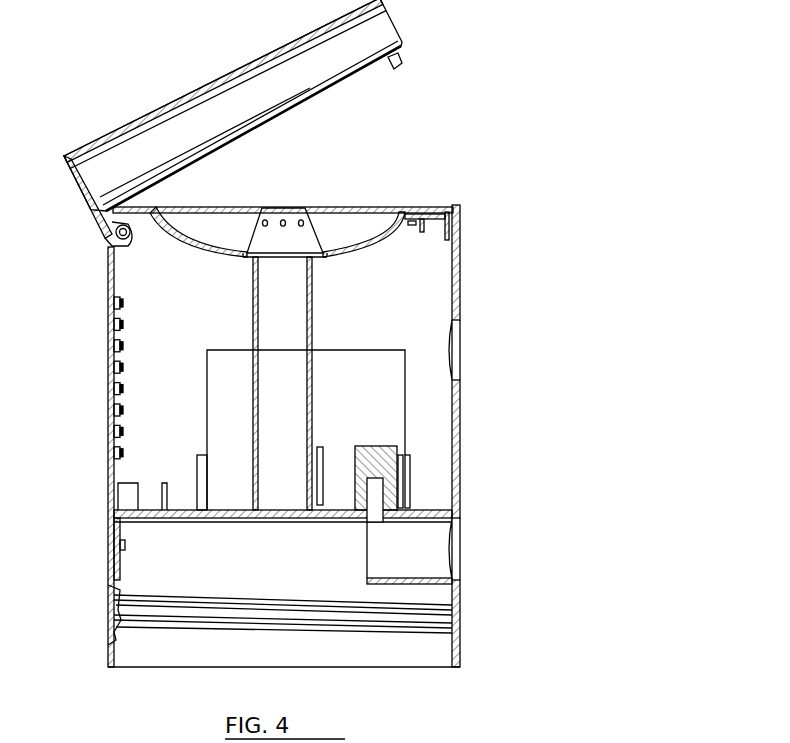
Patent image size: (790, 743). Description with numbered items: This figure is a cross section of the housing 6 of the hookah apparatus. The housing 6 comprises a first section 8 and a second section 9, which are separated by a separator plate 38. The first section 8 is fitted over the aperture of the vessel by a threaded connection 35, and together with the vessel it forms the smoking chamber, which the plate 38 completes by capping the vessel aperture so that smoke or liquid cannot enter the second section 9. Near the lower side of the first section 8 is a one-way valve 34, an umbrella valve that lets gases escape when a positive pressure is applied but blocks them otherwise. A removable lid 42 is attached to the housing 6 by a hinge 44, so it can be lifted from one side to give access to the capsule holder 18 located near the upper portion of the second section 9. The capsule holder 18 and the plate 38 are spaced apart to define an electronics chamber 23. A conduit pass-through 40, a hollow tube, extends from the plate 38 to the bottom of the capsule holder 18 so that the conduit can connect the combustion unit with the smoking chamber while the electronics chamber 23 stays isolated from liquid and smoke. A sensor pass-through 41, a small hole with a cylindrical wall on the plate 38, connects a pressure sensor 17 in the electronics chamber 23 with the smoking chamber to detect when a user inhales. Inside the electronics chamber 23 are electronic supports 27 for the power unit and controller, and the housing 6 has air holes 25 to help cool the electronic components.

The housing 6 is at (597, 287).
The first section 8 is at (540, 584).
The second section 9 is at (515, 362).
The pressure sensor 17 is at (405, 448).
The capsule holder 18 is at (385, 230).
The electronics chamber 23 is at (415, 306).
The air holes 25 is at (113, 367).
The electronic supports 27 is at (200, 455).
The one-way valve 34 is at (110, 530).
The threaded connection 35 is at (462, 625).
The separator plate 38 is at (348, 503).
The conduit pass-through 40 is at (253, 288).
The sensor pass-through 41 is at (375, 492).
The removable lid 42 is at (403, 16).
The hinge 44 is at (112, 214).